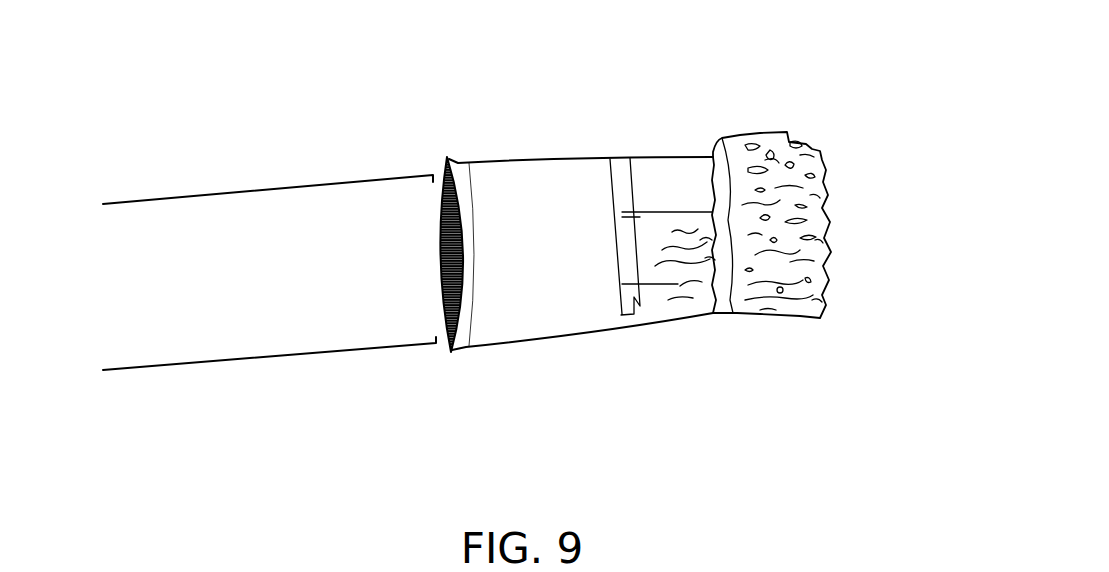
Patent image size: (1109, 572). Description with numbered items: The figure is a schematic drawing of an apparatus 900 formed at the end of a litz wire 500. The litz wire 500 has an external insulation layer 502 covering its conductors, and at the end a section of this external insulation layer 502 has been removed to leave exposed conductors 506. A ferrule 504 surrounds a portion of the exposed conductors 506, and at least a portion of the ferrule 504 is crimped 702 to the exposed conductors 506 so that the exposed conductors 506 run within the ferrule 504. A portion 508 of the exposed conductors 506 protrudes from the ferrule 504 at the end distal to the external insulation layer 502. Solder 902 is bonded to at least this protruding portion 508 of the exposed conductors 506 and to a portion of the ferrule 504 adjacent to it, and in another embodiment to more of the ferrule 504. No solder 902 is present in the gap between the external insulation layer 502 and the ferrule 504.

The apparatus 900 is at (197, 90).
The litz wire 500 is at (715, 120).
The external insulation layer 502 is at (280, 348).
The ferrule 504 is at (575, 332).
The exposed conductors 506 is at (447, 352).
The portion of the exposed conductors protruding from the ferrule 508 is at (780, 125).
The crimped portion 702 is at (687, 293).
The solder 902 is at (781, 294).